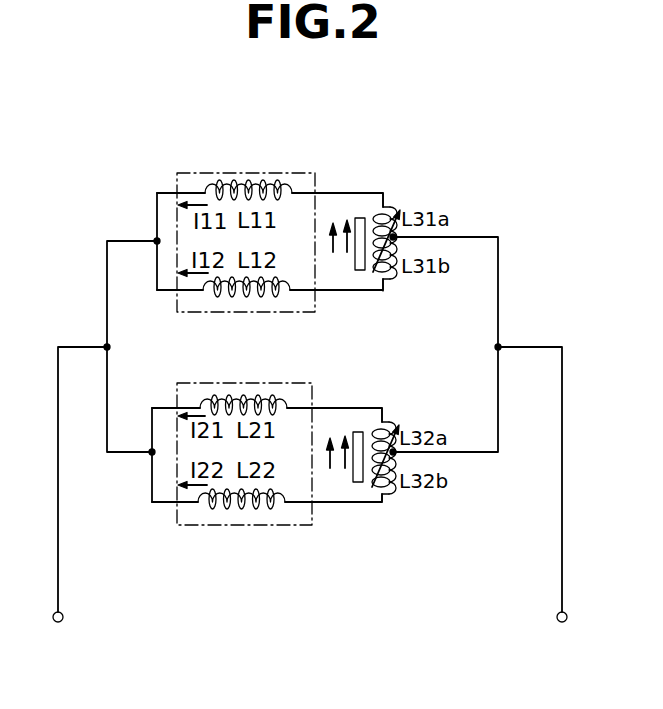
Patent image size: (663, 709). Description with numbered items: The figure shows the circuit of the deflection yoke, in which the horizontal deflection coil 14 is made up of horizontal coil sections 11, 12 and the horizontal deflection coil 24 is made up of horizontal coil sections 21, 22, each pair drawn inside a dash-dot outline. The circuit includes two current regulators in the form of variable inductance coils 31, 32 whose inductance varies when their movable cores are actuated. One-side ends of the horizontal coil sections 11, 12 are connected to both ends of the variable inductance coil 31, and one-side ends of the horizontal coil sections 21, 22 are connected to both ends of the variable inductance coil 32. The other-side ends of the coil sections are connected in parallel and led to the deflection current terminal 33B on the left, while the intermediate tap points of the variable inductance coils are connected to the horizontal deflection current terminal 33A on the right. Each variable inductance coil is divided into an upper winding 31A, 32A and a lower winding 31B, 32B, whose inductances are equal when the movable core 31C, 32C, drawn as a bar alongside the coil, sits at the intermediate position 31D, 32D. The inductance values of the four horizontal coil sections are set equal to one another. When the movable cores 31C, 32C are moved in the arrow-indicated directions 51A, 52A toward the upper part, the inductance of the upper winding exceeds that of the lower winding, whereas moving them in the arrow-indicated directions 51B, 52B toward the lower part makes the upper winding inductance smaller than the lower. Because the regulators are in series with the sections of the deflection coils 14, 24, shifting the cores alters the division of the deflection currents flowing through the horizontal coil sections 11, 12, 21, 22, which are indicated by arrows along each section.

The horizontal coil section 11 is at (245, 182).
The horizontal coil section 12 is at (245, 297).
The horizontal deflection coil 14 is at (212, 172).
The horizontal coil section 21 is at (252, 402).
The horizontal coil section 22 is at (268, 508).
The horizontal deflection coil 24 is at (200, 527).
The variable inductance coil 31 is at (380, 280).
The upper winding 31A is at (392, 203).
The lower winding 31B is at (395, 280).
The movable core 31C is at (360, 217).
The intermediate position 31D is at (398, 239).
The variable inductance coil 32 is at (382, 496).
The upper winding 32A is at (391, 418).
The lower winding 32B is at (393, 494).
The movable core 32C is at (358, 431).
The intermediate position 32D is at (398, 454).
The horizontal deflection current terminal 33A is at (562, 623).
The deflection current terminal 33B is at (58, 623).
The arrow-indicated direction 51A is at (345, 222).
The arrow-indicated direction 51B is at (333, 250).
The arrow-indicated direction 52A is at (344, 438).
The arrow-indicated direction 52B is at (330, 466).